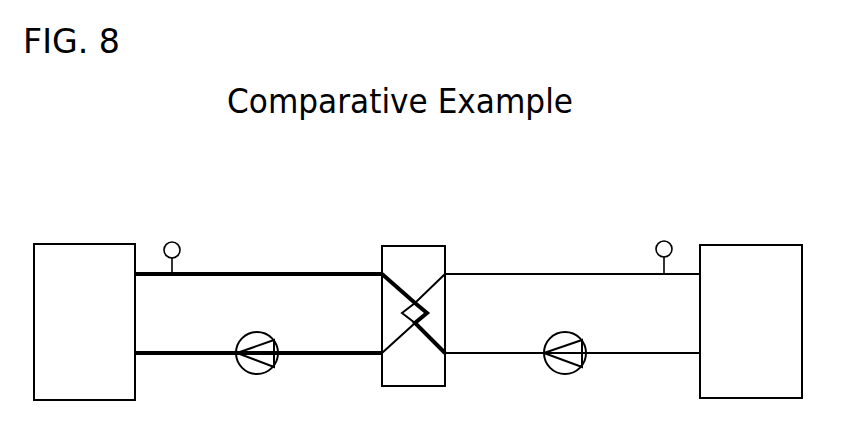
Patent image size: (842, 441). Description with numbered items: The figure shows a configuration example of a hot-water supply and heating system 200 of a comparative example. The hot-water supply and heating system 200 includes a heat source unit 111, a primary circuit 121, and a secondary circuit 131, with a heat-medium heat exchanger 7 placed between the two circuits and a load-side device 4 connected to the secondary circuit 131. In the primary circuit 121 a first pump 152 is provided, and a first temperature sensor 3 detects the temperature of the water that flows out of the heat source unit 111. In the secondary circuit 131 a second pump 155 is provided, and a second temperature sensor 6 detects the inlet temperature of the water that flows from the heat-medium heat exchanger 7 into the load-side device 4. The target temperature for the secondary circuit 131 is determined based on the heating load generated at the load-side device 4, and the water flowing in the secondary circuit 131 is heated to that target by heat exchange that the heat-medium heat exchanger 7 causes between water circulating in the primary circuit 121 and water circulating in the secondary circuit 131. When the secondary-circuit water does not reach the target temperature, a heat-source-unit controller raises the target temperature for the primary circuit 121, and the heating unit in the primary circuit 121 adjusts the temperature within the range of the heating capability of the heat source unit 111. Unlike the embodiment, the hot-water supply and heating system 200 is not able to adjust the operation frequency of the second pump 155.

The hot-water supply and heating system 200 is at (418, 277).
The heat source unit 111 is at (84, 304).
The primary circuit 121 is at (258, 295).
The first temperature sensor 3 is at (183, 245).
The first pump 152 is at (278, 340).
The heat-medium heat exchanger 7 is at (413, 297).
The secondary circuit 131 is at (572, 295).
The second pump 155 is at (587, 341).
The second temperature sensor 6 is at (672, 244).
The load-side device 4 is at (751, 304).